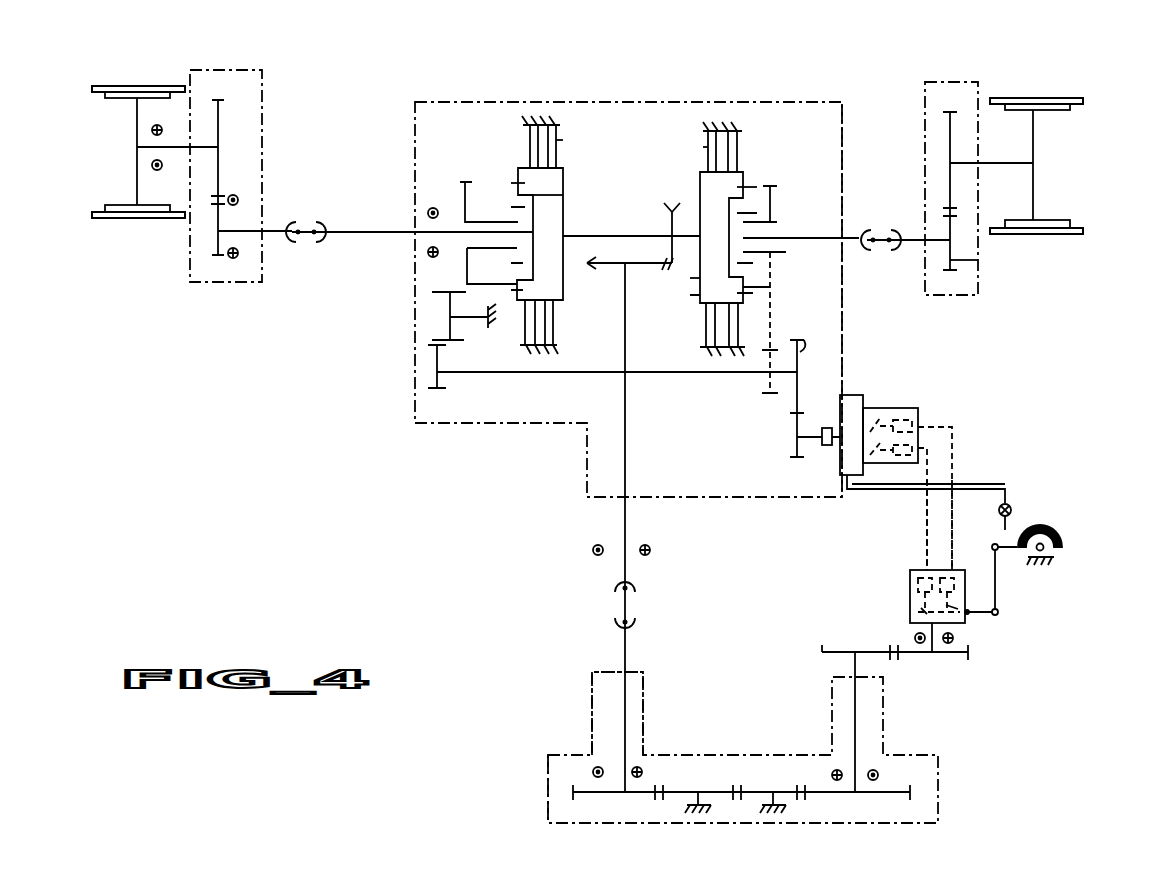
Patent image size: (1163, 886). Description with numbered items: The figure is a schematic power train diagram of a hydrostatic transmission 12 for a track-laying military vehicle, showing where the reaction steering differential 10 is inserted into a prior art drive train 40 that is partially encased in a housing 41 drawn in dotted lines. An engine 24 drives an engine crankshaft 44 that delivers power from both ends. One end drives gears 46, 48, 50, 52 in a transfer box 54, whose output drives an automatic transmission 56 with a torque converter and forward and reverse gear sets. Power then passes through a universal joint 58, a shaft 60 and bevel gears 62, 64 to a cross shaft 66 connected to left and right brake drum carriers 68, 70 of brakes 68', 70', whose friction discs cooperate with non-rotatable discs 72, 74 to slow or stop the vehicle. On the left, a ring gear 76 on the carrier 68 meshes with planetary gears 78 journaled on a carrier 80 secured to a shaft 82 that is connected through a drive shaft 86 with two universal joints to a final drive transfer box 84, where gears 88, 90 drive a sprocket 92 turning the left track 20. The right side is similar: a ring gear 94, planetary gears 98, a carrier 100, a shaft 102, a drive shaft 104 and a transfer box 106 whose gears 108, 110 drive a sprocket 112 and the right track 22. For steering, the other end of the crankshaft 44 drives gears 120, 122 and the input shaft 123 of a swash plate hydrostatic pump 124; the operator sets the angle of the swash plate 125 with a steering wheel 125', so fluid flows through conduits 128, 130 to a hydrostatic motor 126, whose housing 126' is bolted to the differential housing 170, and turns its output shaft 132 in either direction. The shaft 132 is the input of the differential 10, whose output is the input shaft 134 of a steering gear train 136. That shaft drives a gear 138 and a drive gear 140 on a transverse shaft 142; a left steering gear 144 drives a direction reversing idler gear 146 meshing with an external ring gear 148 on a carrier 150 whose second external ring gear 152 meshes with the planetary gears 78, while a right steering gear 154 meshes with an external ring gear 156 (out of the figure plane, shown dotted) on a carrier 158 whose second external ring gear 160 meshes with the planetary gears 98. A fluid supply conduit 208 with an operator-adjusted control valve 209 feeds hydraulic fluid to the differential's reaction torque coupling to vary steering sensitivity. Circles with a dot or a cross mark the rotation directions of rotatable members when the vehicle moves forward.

The reaction steering differential 10 is at (851, 395).
The hydrostatic transmission 12 is at (1050, 97).
The left track 20 is at (121, 85).
The right track 22 is at (1000, 97).
The engine 24 is at (883, 737).
The drive train 40 is at (780, 102).
The housing 41 is at (842, 135).
The engine crankshaft 44 is at (858, 700).
The gear 46 is at (861, 796).
The gear 48 is at (760, 790).
The gear 50 is at (708, 790).
The gear 52 is at (620, 796).
The transfer box 54 is at (548, 768).
The automatic transmission 56 is at (592, 690).
The universal joint 58 is at (623, 606).
The shaft 60 is at (625, 518).
The bevel gear 62 is at (654, 266).
The bevel gear 64 is at (660, 224).
The cross shaft 66 is at (581, 236).
The left brake drum carrier 68 is at (561, 250).
The left brake 68' is at (588, 121).
The right brake drum carrier 70 is at (692, 257).
The right brake 70' is at (673, 146).
The non-rotatable disc 72 is at (523, 134).
The non-rotatable disc 74 is at (742, 147).
The ring gear 76 is at (517, 180).
The planetary gears 78 is at (512, 200).
The carrier 80 is at (540, 197).
The shaft 82 is at (338, 232).
The final drive transfer box 84 is at (205, 70).
The drive shaft 86 is at (304, 229).
The gear 88 is at (217, 240).
The gear 90 is at (218, 102).
The sprocket 92 is at (137, 170).
The ring gear 94 is at (758, 187).
The planetary gears 98 is at (758, 207).
The carrier 100 is at (700, 278).
The shaft 102 is at (862, 236).
The drive shaft 104 is at (881, 248).
The transfer box 106 is at (978, 295).
The gear 108 is at (990, 268).
The gear 110 is at (950, 148).
The sprocket 112 is at (1036, 173).
The gear 120 is at (822, 655).
The gear 122 is at (945, 655).
The input shaft 123 is at (912, 628).
The hydrostatic pump 124 is at (910, 578).
The swash plate 125 is at (902, 596).
The steering wheel 125' is at (1051, 567).
The hydrostatic swash plate motor 126 is at (970, 503).
The housing 126' is at (970, 487).
The conduit 128 is at (927, 510).
The conduit 130 is at (952, 531).
The output shaft 132 is at (903, 406).
The input shaft 134 is at (820, 447).
The steering gear train 136 is at (585, 373).
The gear 138 is at (797, 432).
The drive gear 140 is at (807, 382).
The transverse shaft 142 is at (688, 376).
The left steering gear 144 is at (437, 373).
The direction reversing idler gear 146 is at (443, 340).
The external ring gear 148 is at (467, 284).
The carrier 150 is at (467, 257).
The second external ring gear 152 is at (492, 271).
The right steering gear 154 is at (770, 390).
The external ring gear 156 is at (770, 288).
The carrier 158 is at (786, 253).
The second external ring gear 160 is at (774, 222).
The housing 170 is at (865, 402).
The fluid supply conduit 208 is at (1008, 489).
The control valve 209 is at (1014, 511).